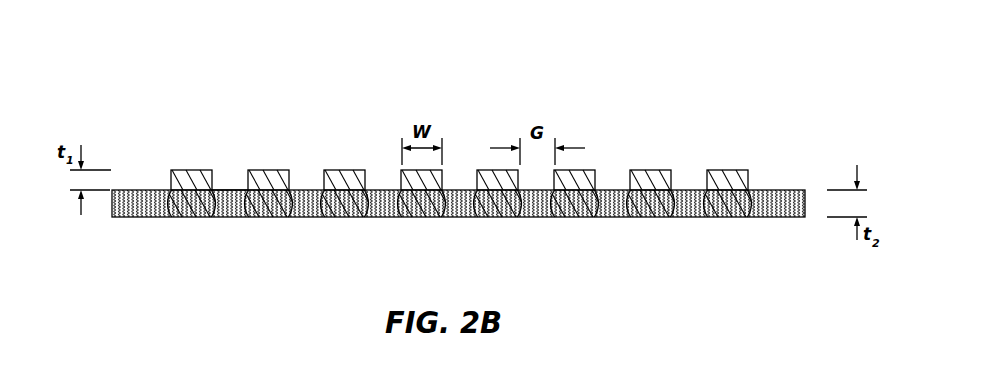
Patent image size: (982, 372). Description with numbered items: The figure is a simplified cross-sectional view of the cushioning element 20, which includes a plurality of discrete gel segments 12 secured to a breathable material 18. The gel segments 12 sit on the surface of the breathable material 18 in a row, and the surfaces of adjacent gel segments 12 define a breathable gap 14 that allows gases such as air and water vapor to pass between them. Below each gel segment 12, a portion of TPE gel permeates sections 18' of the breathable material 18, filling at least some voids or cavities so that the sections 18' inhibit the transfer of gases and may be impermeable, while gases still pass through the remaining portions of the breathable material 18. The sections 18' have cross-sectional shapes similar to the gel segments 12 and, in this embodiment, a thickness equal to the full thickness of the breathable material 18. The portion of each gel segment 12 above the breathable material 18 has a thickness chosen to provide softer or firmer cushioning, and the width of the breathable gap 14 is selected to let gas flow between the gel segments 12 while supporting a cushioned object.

The cushioning element 20 is at (100, 110).
The gel segments 12 is at (193, 172).
The breathable gap 14 is at (229, 168).
The breathable material 18 is at (480, 168).
The sections of the breathable material 18' is at (463, 238).